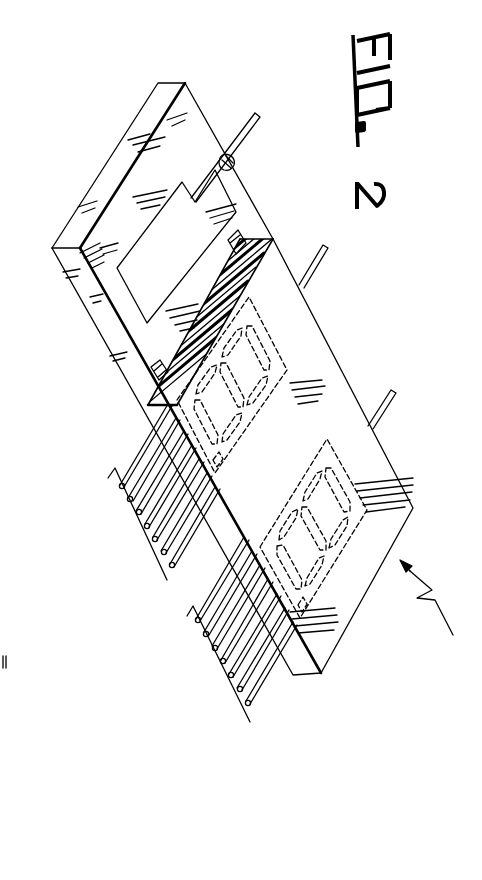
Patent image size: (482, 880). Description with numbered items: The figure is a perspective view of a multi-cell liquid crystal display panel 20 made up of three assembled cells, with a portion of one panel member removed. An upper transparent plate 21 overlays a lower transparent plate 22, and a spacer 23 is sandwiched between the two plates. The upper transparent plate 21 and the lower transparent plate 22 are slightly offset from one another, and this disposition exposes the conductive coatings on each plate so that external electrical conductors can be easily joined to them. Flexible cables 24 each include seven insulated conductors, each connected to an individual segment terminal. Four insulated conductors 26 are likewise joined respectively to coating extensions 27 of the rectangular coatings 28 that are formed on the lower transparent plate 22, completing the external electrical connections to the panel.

The liquid crystal display panel 20 is at (437, 605).
The upper transparent plate 21 is at (226, 546).
The lower transparent plate 22 is at (88, 287).
The spacer 23 is at (234, 240).
The flexible cables 24 is at (140, 538).
The insulated conductors 26 is at (320, 252).
The coating extensions 27 is at (224, 160).
The rectangular coatings 28 is at (163, 233).